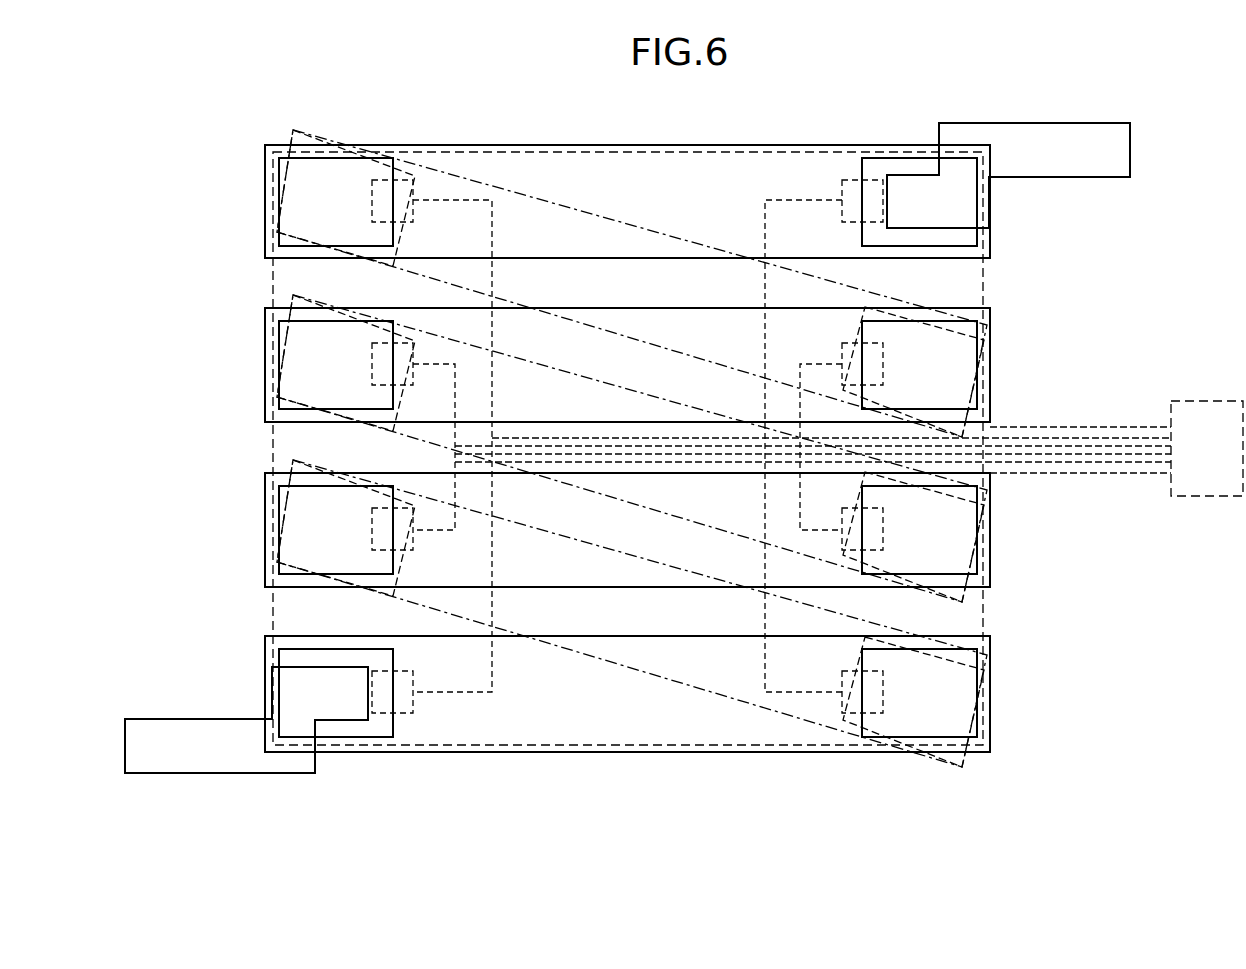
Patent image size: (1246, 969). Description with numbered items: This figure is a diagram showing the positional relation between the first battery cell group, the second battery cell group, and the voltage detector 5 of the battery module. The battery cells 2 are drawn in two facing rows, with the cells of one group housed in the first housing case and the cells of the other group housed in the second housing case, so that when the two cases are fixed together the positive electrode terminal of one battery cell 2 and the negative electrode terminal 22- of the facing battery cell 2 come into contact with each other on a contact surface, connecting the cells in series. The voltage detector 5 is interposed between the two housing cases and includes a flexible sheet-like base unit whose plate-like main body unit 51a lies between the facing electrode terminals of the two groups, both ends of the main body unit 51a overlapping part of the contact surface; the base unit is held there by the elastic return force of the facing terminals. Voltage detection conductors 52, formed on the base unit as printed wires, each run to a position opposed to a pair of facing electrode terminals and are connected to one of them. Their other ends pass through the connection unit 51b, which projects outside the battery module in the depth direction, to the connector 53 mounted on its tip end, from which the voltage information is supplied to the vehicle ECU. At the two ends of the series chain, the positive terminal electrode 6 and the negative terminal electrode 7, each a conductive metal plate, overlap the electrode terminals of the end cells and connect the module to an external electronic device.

The battery cell 2 is at (270, 140).
The voltage detector 5 is at (708, 145).
The terminal electrode 6 is at (1130, 152).
The terminal electrode 7 is at (185, 774).
The negative electrode terminal 22- is at (288, 168).
The main body unit 51a is at (523, 176).
The connection unit 51b is at (1140, 437).
The voltage detection conductor 52 is at (453, 390).
The connector 53 is at (1212, 420).